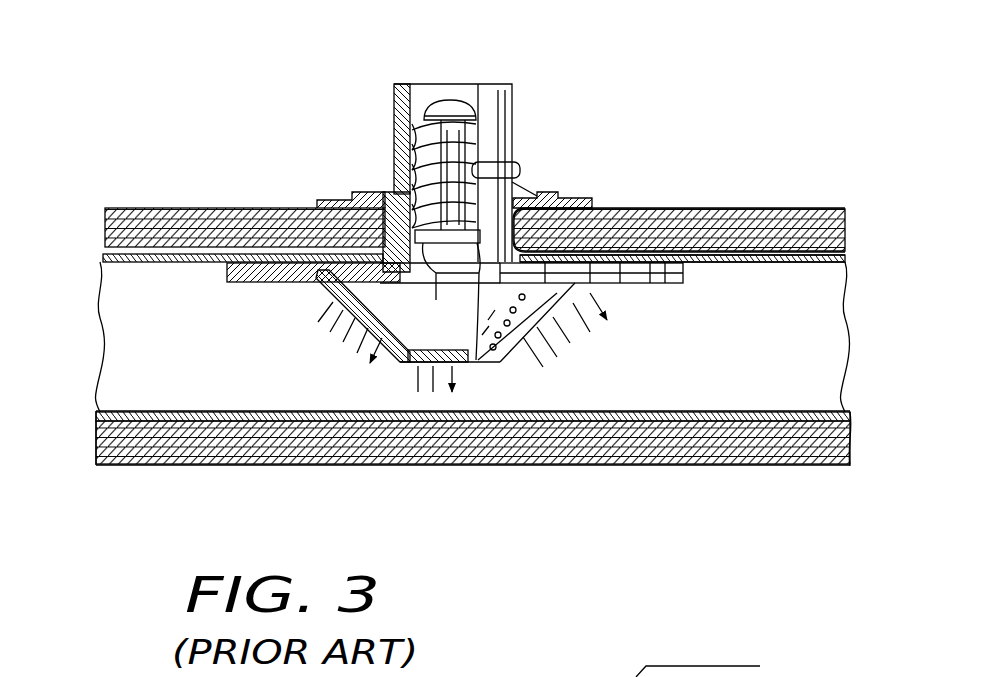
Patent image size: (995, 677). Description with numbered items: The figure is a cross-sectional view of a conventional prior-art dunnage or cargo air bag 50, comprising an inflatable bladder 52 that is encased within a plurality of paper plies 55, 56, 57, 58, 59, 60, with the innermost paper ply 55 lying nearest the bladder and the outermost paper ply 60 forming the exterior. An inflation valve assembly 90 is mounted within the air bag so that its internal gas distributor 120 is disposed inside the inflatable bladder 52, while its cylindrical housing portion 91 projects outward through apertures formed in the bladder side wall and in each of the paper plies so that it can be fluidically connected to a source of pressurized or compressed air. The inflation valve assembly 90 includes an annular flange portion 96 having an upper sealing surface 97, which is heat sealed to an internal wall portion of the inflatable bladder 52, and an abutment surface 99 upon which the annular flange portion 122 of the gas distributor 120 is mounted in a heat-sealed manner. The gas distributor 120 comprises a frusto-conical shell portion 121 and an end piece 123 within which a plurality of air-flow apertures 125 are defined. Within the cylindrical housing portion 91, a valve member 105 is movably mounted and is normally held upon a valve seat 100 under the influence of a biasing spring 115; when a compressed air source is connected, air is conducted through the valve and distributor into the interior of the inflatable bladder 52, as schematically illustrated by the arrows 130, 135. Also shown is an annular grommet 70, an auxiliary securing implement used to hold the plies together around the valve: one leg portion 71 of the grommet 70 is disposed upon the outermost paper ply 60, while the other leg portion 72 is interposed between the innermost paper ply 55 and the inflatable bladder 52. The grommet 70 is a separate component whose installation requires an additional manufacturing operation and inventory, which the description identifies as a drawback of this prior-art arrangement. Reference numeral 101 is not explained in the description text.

The dunnage or cargo air bag 50 is at (718, 108).
The inflatable bladder 52 is at (104, 206).
The paper ply 55 is at (765, 243).
The paper ply 56 is at (807, 243).
The paper ply 57 is at (752, 465).
The paper ply 58 is at (654, 465).
The paper ply 59 is at (573, 465).
The paper ply 60 is at (215, 207).
The annular grommet 70 is at (327, 197).
The leg portion 71 is at (578, 190).
The leg portion 72 is at (590, 253).
The inflation valve assembly 90 is at (557, 110).
The cylindrical housing portion 91 is at (519, 100).
The annular flange portion 96 is at (693, 280).
The upper sealing surface 97 is at (273, 277).
The abutment surface 99 is at (694, 283).
The valve seat 100 is at (440, 274).
The valve stem 101 is at (418, 178).
The valve member 105 is at (428, 120).
The biasing spring 115 is at (434, 142).
The gas distributor 120 is at (504, 370).
The frusto-conical shell portion 121 is at (580, 290).
The annular flange portion 122 is at (228, 278).
The end piece 123 is at (402, 364).
The air-flow apertures 125 is at (400, 365).
The arrows 130 is at (318, 313).
The arrows 135 is at (456, 395).